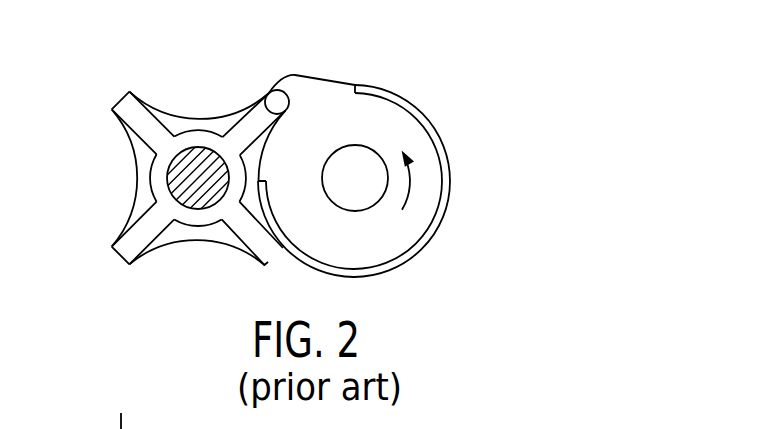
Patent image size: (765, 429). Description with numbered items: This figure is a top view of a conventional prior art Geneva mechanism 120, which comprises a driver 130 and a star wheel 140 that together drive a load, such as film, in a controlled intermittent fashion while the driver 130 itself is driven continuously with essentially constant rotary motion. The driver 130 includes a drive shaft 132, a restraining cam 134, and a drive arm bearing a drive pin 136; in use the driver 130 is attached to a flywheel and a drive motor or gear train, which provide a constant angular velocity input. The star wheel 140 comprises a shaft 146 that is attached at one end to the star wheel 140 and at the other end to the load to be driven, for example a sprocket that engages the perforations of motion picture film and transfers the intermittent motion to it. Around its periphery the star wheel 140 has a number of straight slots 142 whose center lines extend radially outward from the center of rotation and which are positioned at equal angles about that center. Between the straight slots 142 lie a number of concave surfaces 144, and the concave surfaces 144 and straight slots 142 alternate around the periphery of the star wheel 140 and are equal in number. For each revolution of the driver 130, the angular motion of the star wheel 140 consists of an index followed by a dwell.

The Geneva mechanism 120 is at (507, 73).
The driver 130 is at (380, 85).
The drive shaft 132 is at (370, 204).
The restraining cam 134 is at (443, 157).
The drive pin 136 is at (278, 100).
The star wheel 140 is at (188, 118).
The straight slots 142 is at (235, 140).
The concave surfaces 144 is at (137, 190).
The shaft 146 is at (167, 178).